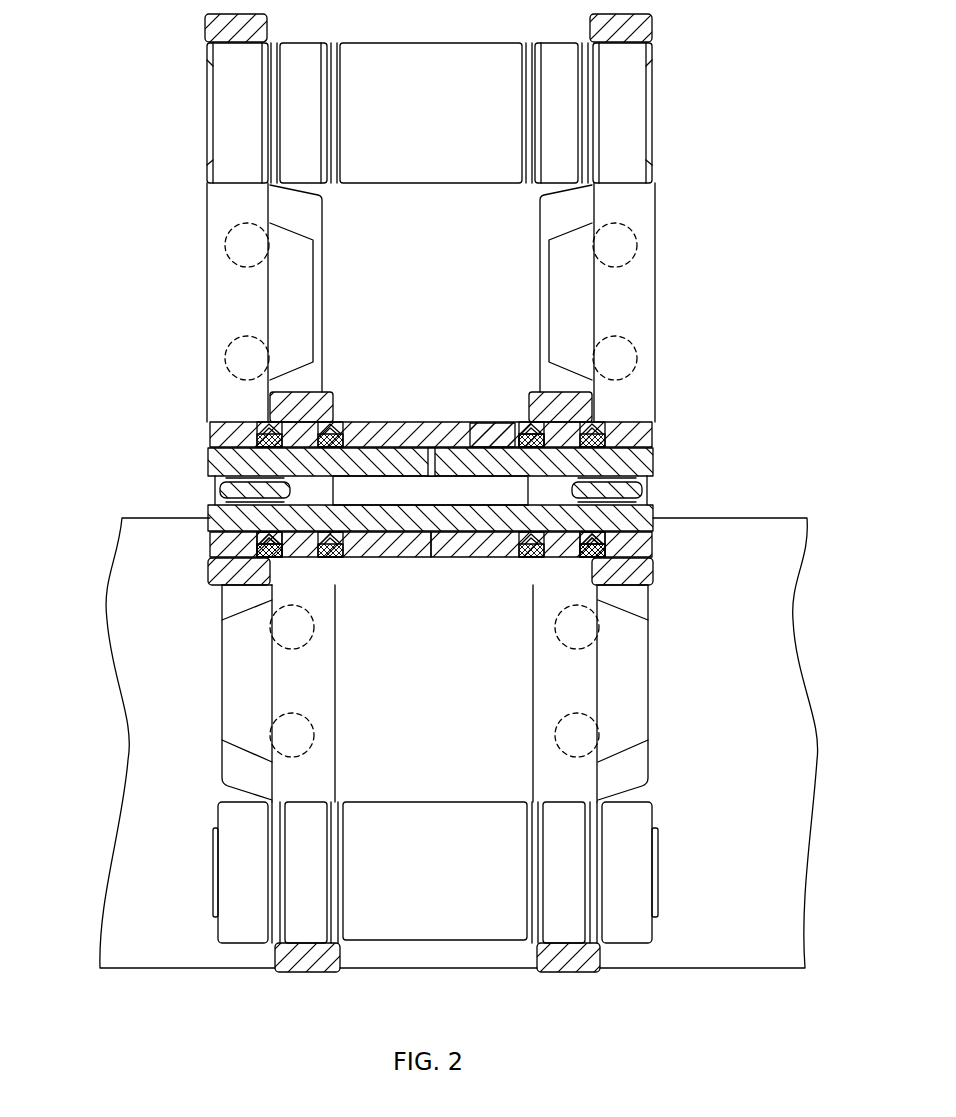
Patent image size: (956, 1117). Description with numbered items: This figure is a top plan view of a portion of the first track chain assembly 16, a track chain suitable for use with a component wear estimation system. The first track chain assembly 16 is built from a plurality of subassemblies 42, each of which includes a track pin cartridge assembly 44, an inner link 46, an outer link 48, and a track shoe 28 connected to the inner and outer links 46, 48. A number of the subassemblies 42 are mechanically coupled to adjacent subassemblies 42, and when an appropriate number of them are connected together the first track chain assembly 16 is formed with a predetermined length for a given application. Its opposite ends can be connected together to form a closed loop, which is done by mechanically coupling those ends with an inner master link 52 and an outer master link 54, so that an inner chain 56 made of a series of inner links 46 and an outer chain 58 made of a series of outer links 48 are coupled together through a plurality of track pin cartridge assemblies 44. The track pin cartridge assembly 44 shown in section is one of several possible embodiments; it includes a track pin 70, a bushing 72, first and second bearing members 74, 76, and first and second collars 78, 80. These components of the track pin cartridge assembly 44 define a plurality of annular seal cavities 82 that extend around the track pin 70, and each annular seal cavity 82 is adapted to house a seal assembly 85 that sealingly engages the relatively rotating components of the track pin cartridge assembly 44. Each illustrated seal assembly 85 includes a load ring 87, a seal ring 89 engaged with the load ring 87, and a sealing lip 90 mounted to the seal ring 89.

The first track chain assembly 16 is at (428, 256).
The track shoe 28 is at (167, 517).
The subassembly 42 is at (404, 693).
The track pin cartridge assembly 44 is at (439, 192).
The inner link 46 is at (220, 762).
The outer link 48 is at (650, 765).
The inner master link 52 is at (205, 112).
The outer master link 54 is at (653, 112).
The inner chain 56 is at (208, 353).
The outer chain 58 is at (653, 352).
The track pin 70 is at (653, 457).
The bushing 72 is at (431, 368).
The first bearing member 74 is at (292, 556).
The second bearing member 76 is at (555, 560).
The first collar 78 is at (251, 569).
The second collar 80 is at (595, 583).
The annular seal cavity 82 is at (258, 550).
The seal assembly 85 is at (289, 566).
The load ring 87 is at (527, 424).
The seal ring 89 is at (490, 443).
The sealing lip 90 is at (517, 440).